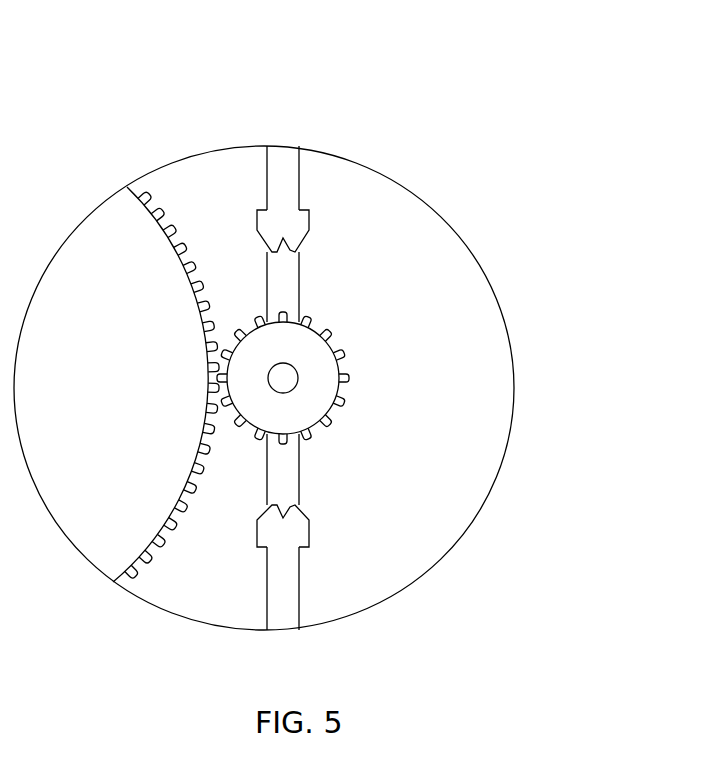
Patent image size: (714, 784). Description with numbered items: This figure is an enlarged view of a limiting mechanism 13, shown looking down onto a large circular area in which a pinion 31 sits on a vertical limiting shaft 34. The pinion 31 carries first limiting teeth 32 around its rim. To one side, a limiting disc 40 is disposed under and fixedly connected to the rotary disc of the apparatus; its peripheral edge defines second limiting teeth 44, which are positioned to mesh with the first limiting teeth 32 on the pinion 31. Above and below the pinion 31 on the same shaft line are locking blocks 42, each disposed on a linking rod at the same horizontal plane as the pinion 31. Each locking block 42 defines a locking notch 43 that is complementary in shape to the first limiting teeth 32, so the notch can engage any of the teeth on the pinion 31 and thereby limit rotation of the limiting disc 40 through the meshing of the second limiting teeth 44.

The limiting mechanism 13 is at (412, 397).
The pinion 31 is at (313, 357).
The first limiting teeth 32 is at (343, 410).
The limiting shaft 34 is at (287, 192).
The limiting disc 40 is at (106, 249).
The locking block 42 is at (303, 535).
The locking notch 43 is at (288, 505).
The second limiting teeth 44 is at (188, 247).